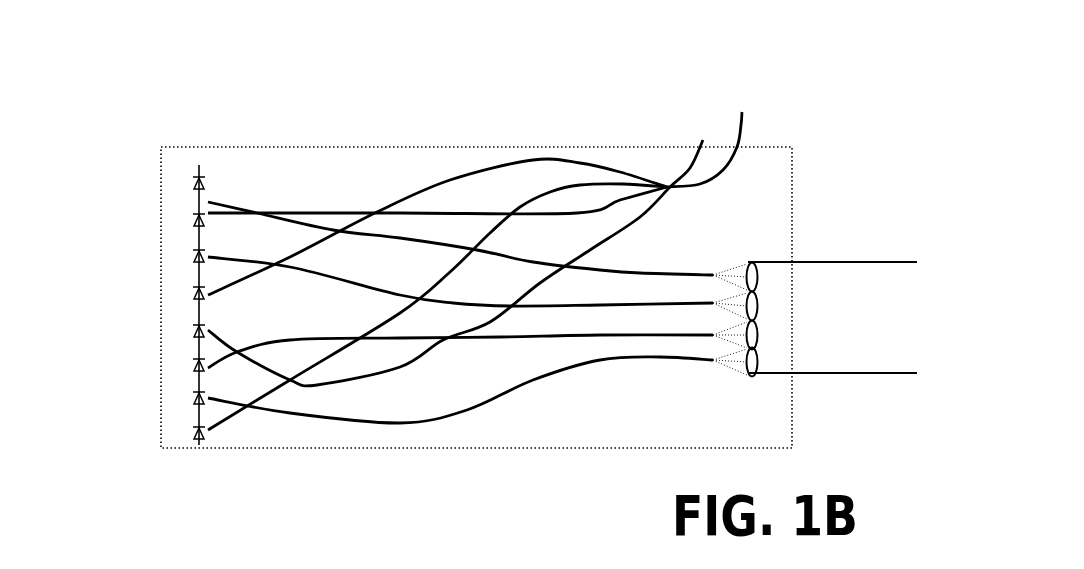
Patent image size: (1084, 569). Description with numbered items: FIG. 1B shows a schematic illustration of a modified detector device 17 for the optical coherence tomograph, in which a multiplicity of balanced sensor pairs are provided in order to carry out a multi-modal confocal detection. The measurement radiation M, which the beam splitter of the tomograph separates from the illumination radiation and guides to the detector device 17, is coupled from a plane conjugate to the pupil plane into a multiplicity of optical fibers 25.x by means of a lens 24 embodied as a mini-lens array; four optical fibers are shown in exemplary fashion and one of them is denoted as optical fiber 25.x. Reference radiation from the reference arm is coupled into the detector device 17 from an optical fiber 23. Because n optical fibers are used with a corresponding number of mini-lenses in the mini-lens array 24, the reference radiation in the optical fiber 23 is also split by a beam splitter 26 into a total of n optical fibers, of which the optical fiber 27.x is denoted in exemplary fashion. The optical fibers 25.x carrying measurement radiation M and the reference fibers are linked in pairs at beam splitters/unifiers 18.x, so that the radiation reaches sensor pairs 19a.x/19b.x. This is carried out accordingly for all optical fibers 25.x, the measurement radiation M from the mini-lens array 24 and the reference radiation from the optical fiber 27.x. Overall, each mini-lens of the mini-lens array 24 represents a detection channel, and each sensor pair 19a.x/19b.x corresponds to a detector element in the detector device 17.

The detector device 17 is at (485, 448).
The beam splitter/unifier 18.x is at (257, 213).
The sensor 19a.x is at (196, 187).
The sensor 19b.x is at (196, 226).
The optical fiber 23 is at (742, 133).
The lens embodied as a mini-lens array 24 is at (748, 373).
The optical fiber 25.x is at (667, 272).
The beam splitter 26 is at (703, 140).
The optical fiber 27.x is at (580, 208).
The measurement radiation M is at (865, 350).